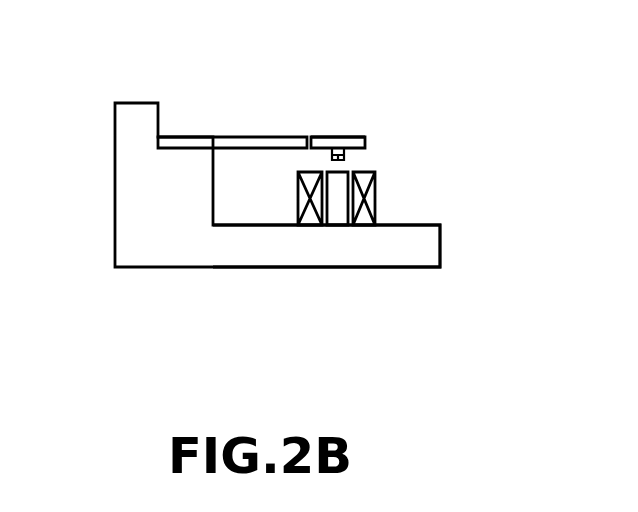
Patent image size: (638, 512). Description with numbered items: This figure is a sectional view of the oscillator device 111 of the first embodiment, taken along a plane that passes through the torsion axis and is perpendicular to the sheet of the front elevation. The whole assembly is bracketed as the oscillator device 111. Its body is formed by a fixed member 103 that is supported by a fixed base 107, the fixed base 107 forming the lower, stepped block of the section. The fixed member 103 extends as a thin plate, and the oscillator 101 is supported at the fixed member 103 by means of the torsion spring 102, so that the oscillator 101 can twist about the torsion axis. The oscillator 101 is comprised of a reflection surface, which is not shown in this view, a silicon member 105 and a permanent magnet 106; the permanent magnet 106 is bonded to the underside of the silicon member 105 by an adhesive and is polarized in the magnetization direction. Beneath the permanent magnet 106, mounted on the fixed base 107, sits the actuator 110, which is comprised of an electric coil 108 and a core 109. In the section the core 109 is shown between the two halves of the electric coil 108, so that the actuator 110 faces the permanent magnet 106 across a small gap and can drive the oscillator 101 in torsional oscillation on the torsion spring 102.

The oscillator 101 is at (412, 94).
The torsion spring 102 is at (260, 140).
The fixed member 103 is at (180, 139).
The silicon member 105 is at (341, 141).
The permanent magnet 106 is at (345, 155).
The fixed base 107 is at (423, 257).
The electric coil 108 is at (307, 225).
The core 109 is at (332, 225).
The actuator 110 is at (328, 295).
The oscillator device 111 is at (110, 22).